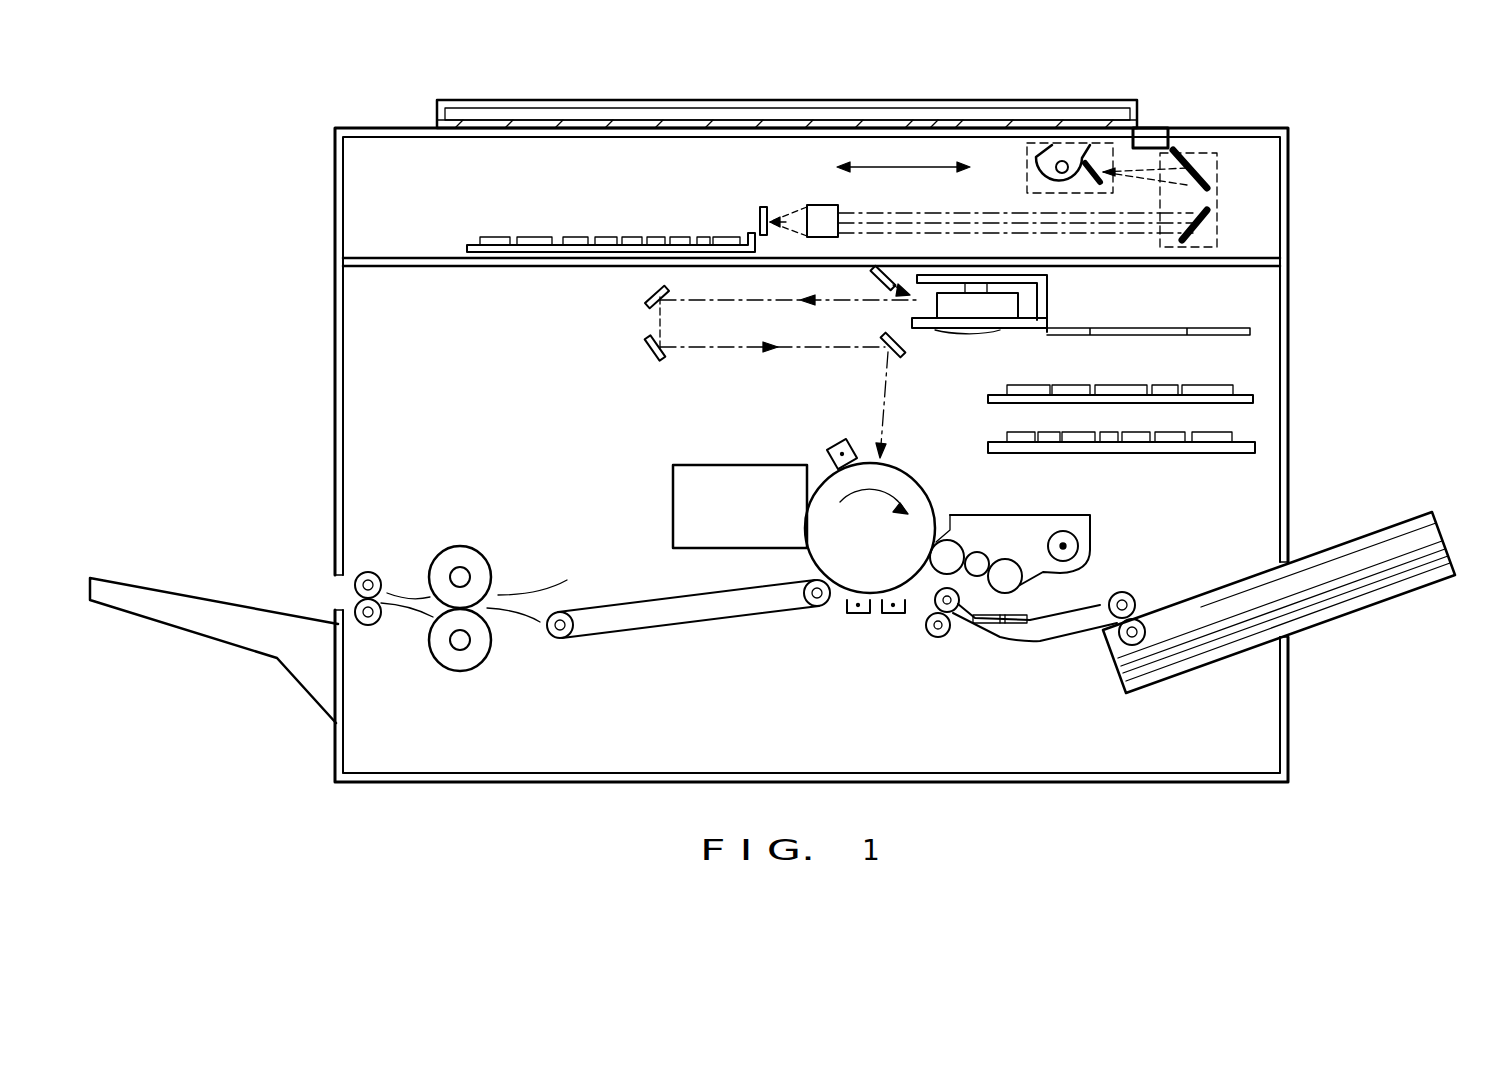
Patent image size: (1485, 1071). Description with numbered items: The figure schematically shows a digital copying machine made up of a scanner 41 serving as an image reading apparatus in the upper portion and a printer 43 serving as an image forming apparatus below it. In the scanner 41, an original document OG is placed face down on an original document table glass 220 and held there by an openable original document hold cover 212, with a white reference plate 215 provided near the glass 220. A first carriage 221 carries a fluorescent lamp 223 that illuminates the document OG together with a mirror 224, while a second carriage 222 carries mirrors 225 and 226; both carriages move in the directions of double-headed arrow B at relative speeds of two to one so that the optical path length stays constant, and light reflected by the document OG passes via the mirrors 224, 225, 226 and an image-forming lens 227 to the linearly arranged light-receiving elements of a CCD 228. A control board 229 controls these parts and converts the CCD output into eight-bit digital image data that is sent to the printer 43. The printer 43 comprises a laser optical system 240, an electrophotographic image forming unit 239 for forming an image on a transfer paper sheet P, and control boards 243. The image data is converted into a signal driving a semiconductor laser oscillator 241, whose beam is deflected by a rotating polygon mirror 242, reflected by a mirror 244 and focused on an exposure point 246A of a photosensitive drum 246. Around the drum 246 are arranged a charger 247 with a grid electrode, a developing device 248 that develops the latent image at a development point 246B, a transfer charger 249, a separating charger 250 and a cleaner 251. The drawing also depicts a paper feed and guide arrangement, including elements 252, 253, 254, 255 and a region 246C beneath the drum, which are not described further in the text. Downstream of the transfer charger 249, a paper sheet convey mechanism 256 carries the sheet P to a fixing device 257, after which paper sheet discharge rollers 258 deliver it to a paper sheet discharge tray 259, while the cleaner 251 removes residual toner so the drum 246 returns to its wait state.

The scanner 41 is at (353, 207).
The printer 43 is at (1255, 725).
The original document hold cover 212 is at (775, 118).
The original document table glass 220 is at (603, 133).
The original document OG is at (942, 125).
The control board 229 is at (483, 218).
The CCD 228 is at (762, 205).
The image-forming lens 227 is at (820, 205).
The double-headed arrow B is at (903, 155).
The first carriage 221 is at (1027, 177).
The fluorescent lamp 223 is at (1062, 165).
The mirror 224 is at (1095, 165).
The white reference plate 215 is at (1150, 138).
The mirror 225 is at (1200, 165).
The mirror 226 is at (1200, 225).
The second carriage 222 is at (1215, 245).
The mirror 244 is at (648, 348).
The semiconductor laser oscillator 241 is at (875, 280).
The laser optical system 240 is at (943, 337).
The polygon mirror 242 is at (1000, 308).
The control boards 243 is at (1255, 448).
The charger 247 is at (838, 442).
The exposure point 246A is at (886, 455).
The photosensitive drum 246 is at (937, 505).
The cleaner 251 is at (672, 510).
The developing device 248 is at (1027, 532).
The fixing device 257 is at (462, 548).
The paper sheet discharge rollers 258 is at (372, 627).
The paper sheet convey mechanism 256 is at (610, 640).
The transfer charger 246C is at (845, 600).
The separating charger 250 is at (850, 613).
The development point 246B is at (880, 598).
The transfer charger 249 is at (897, 615).
The electrophotographic image forming unit 239 is at (918, 662).
The register rollers 255 is at (945, 637).
The paper guide 253 is at (1103, 645).
The feed rollers 254 is at (1120, 592).
The paper cassette 252 is at (1165, 680).
The transfer paper sheet P is at (1300, 618).
The paper sheet discharge tray 259 is at (225, 665).